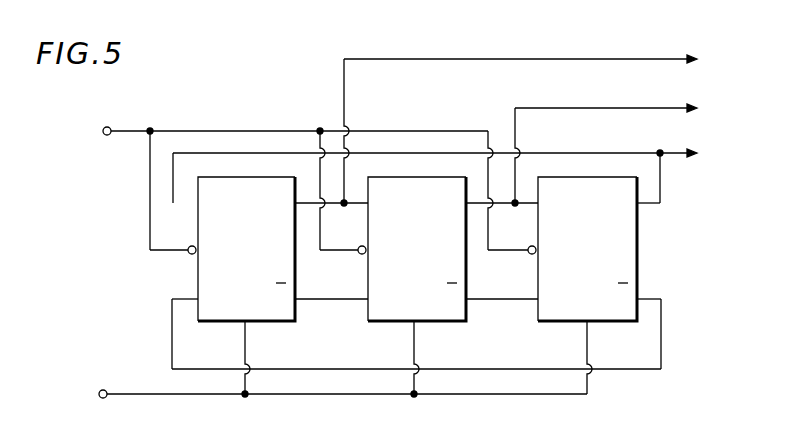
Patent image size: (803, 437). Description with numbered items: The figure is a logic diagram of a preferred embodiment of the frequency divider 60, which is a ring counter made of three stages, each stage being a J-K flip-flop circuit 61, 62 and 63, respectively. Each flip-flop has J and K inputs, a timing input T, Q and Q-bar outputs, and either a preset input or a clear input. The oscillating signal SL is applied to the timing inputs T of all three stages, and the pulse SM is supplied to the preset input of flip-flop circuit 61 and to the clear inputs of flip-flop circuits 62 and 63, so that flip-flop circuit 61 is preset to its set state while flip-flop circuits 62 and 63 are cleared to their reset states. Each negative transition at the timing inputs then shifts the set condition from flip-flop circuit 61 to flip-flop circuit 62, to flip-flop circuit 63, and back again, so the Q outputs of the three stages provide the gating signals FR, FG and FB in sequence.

The frequency divider 60 is at (296, 114).
The J-K flip-flop circuit 61 is at (276, 322).
The J-K flip-flop circuit 62 is at (440, 322).
The J-K flip-flop circuit 63 is at (608, 322).